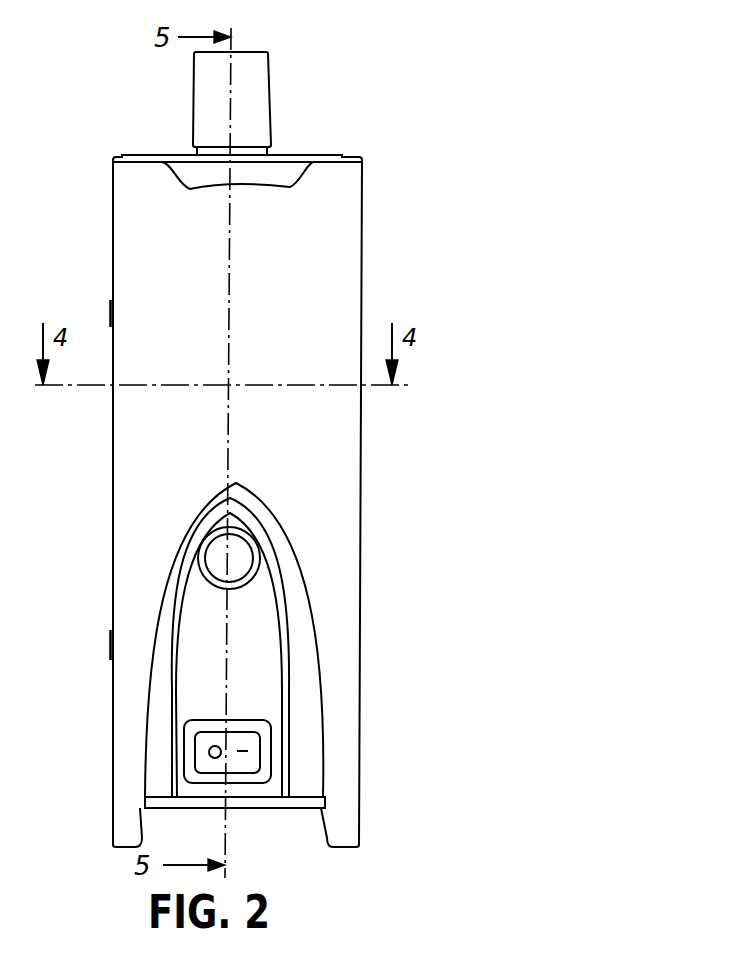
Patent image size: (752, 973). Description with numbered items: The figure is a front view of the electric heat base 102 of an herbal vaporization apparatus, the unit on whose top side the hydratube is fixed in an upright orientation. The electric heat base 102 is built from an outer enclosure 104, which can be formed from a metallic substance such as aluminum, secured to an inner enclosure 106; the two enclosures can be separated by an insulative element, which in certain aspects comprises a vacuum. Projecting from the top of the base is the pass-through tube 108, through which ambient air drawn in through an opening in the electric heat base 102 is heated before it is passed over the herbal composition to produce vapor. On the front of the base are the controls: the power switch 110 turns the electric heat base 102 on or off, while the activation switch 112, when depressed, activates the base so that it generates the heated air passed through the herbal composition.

The electric heat base 102 is at (523, 98).
The outer enclosure 104 is at (360, 258).
The inner enclosure 106 is at (295, 157).
The pass-through tube 108 is at (271, 92).
The power switch 110 is at (262, 757).
The activation switch 112 is at (242, 553).